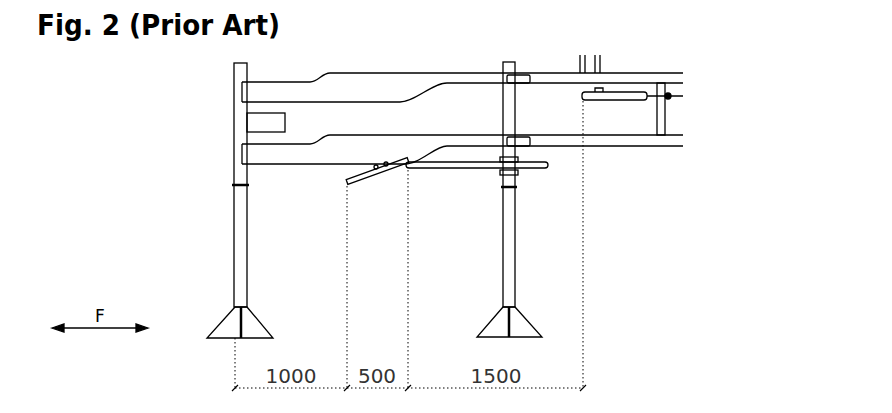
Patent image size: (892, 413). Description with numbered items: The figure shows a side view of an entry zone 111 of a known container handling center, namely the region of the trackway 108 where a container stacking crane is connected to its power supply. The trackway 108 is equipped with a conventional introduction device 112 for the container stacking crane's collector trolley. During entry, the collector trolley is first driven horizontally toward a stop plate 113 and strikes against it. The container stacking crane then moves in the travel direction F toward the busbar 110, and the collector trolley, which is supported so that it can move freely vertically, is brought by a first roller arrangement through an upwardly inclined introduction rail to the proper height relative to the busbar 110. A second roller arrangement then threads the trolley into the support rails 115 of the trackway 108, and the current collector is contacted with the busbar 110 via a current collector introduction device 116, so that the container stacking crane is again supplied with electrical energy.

The trackway 108 is at (234, 264).
The busbar 110 is at (672, 101).
The entry zone 111 is at (140, 153).
The introduction device 112 is at (366, 183).
The stop plate 113 is at (299, 166).
The support rails 115 is at (683, 73).
The current collector introduction device 116 is at (605, 101).